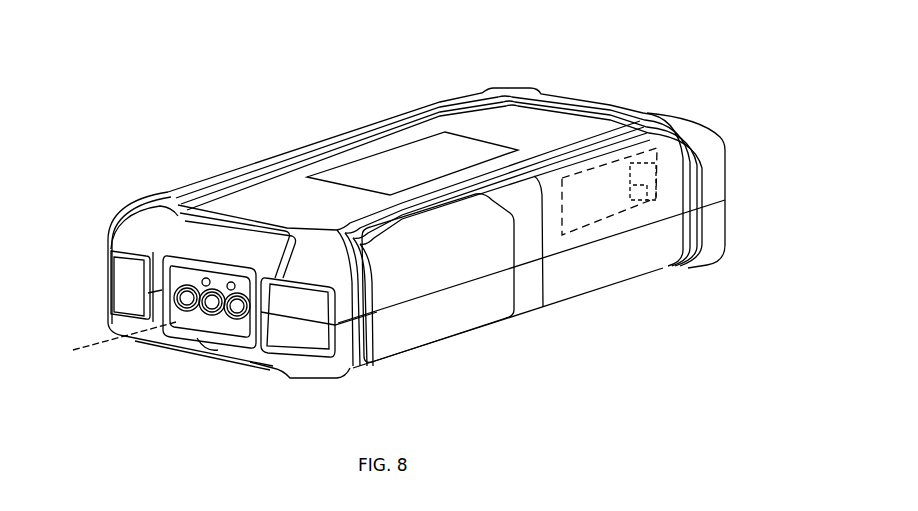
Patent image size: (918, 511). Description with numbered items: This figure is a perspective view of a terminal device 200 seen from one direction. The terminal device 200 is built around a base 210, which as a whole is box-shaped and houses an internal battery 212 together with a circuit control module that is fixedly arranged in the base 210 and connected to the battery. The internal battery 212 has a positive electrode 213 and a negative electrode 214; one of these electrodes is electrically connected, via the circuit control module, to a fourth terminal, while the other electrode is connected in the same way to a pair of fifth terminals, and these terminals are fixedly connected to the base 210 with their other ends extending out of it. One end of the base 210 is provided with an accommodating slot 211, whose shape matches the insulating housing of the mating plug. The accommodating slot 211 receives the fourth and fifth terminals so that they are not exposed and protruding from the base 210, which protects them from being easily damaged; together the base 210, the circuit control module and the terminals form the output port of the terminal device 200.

The terminal device 200 is at (111, 49).
The base 210 is at (245, 197).
The accommodating slot 211 is at (177, 313).
The internal battery 212 is at (599, 199).
The positive electrode 213 is at (657, 163).
The negative electrode 214 is at (656, 197).